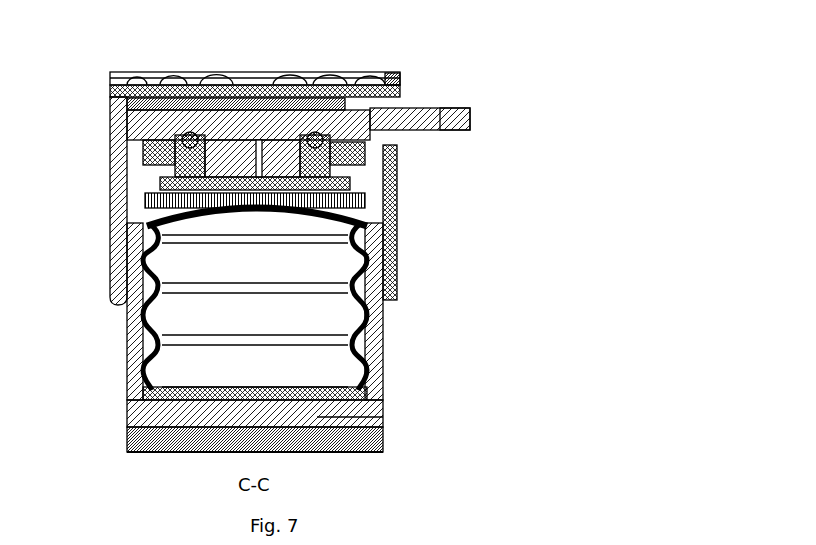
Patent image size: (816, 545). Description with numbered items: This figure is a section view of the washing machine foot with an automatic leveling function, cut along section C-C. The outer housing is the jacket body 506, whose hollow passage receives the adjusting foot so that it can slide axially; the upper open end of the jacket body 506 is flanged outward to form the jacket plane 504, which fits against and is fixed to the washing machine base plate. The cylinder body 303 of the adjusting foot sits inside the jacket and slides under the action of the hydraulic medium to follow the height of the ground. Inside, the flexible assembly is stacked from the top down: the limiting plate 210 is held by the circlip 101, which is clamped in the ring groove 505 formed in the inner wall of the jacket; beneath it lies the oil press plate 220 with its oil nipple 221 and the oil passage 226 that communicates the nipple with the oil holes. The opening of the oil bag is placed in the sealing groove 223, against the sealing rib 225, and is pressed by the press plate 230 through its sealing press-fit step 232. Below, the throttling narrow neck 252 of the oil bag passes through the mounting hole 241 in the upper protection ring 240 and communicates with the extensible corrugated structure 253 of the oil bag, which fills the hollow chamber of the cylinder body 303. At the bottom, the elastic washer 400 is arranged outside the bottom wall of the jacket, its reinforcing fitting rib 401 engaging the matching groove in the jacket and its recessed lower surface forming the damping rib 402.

The circlip 101 is at (112, 74).
The limiting plate 210 is at (262, 118).
The oil passage 226 is at (308, 120).
The sealing groove 223 is at (190, 137).
The jacket plane 504 is at (400, 73).
The oil press plate 220 is at (390, 108).
The oil nipple 221 is at (470, 123).
The sealing press-fit step 232 is at (350, 157).
The press plate 230 is at (350, 177).
The ring groove 505 is at (112, 90).
The sealing rib 225 is at (143, 157).
The throttling narrow neck 252 is at (143, 197).
The upper protection ring 240 is at (140, 210).
The mounting hole 241 is at (143, 233).
The corrugated structure 253 is at (128, 362).
The cylinder body 303 is at (383, 343).
The jacket body 506 is at (397, 250).
The reinforcing fitting rib 401 is at (383, 400).
The elastic washer 400 is at (383, 433).
The damping rib 402 is at (370, 455).